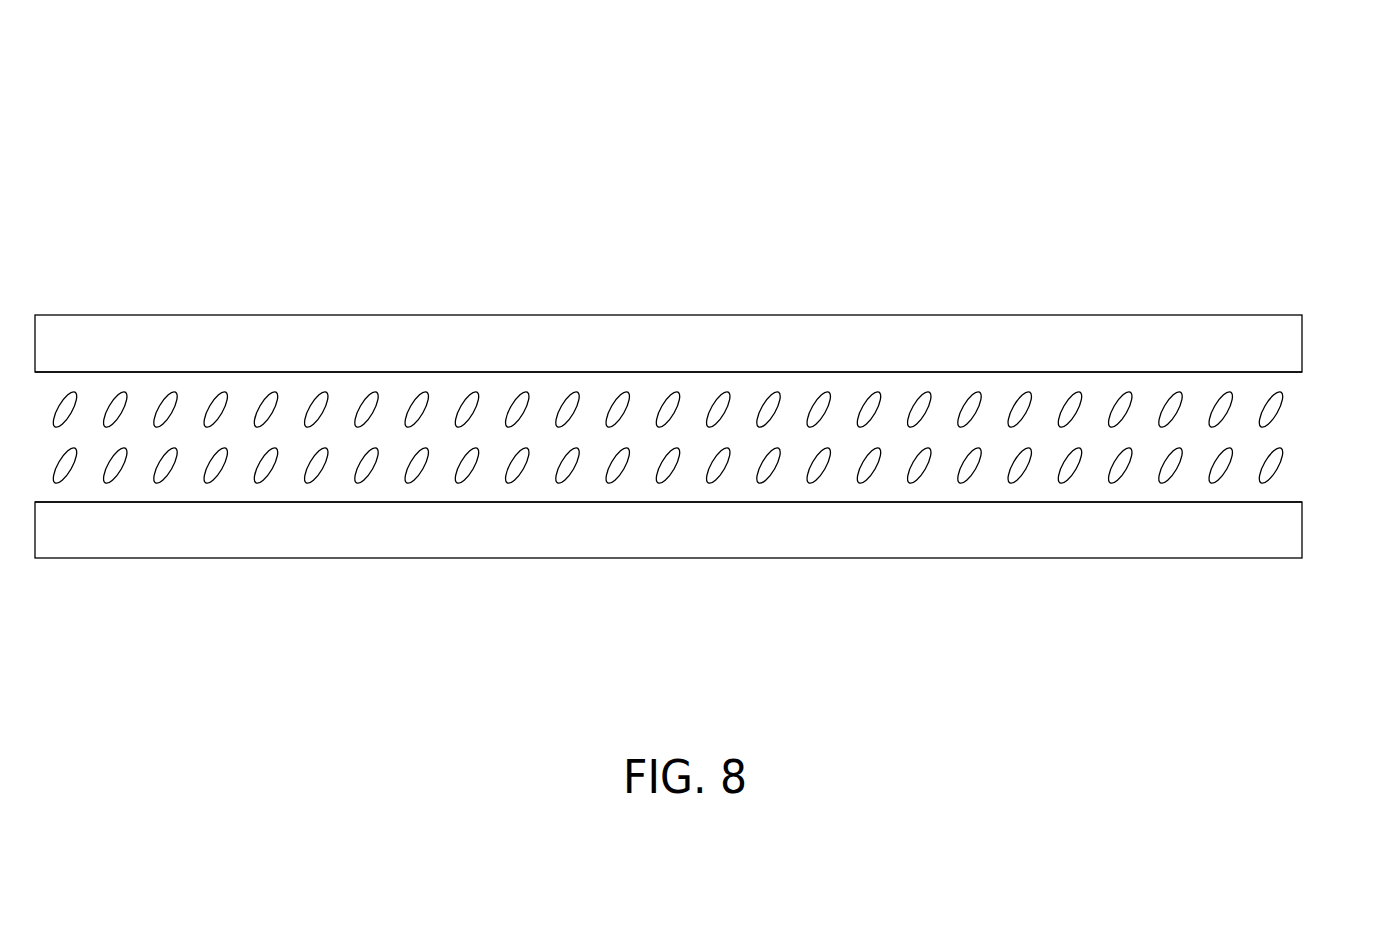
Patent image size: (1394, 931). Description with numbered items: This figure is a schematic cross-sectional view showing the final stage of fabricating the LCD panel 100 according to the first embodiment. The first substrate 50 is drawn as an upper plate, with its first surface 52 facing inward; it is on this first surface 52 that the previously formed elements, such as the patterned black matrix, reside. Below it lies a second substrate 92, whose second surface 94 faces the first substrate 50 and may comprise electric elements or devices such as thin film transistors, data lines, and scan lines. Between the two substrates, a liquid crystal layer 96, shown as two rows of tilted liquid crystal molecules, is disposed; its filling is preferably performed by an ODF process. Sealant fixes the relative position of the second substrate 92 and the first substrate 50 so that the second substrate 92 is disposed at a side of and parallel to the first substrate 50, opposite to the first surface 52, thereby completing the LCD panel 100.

The LCD panel 100 is at (1233, 175).
The first substrate 50 is at (1283, 355).
The first surface 52 is at (97, 372).
The liquid crystal layer 96 is at (1310, 377).
The second substrate 92 is at (1283, 542).
The second surface 94 is at (130, 502).